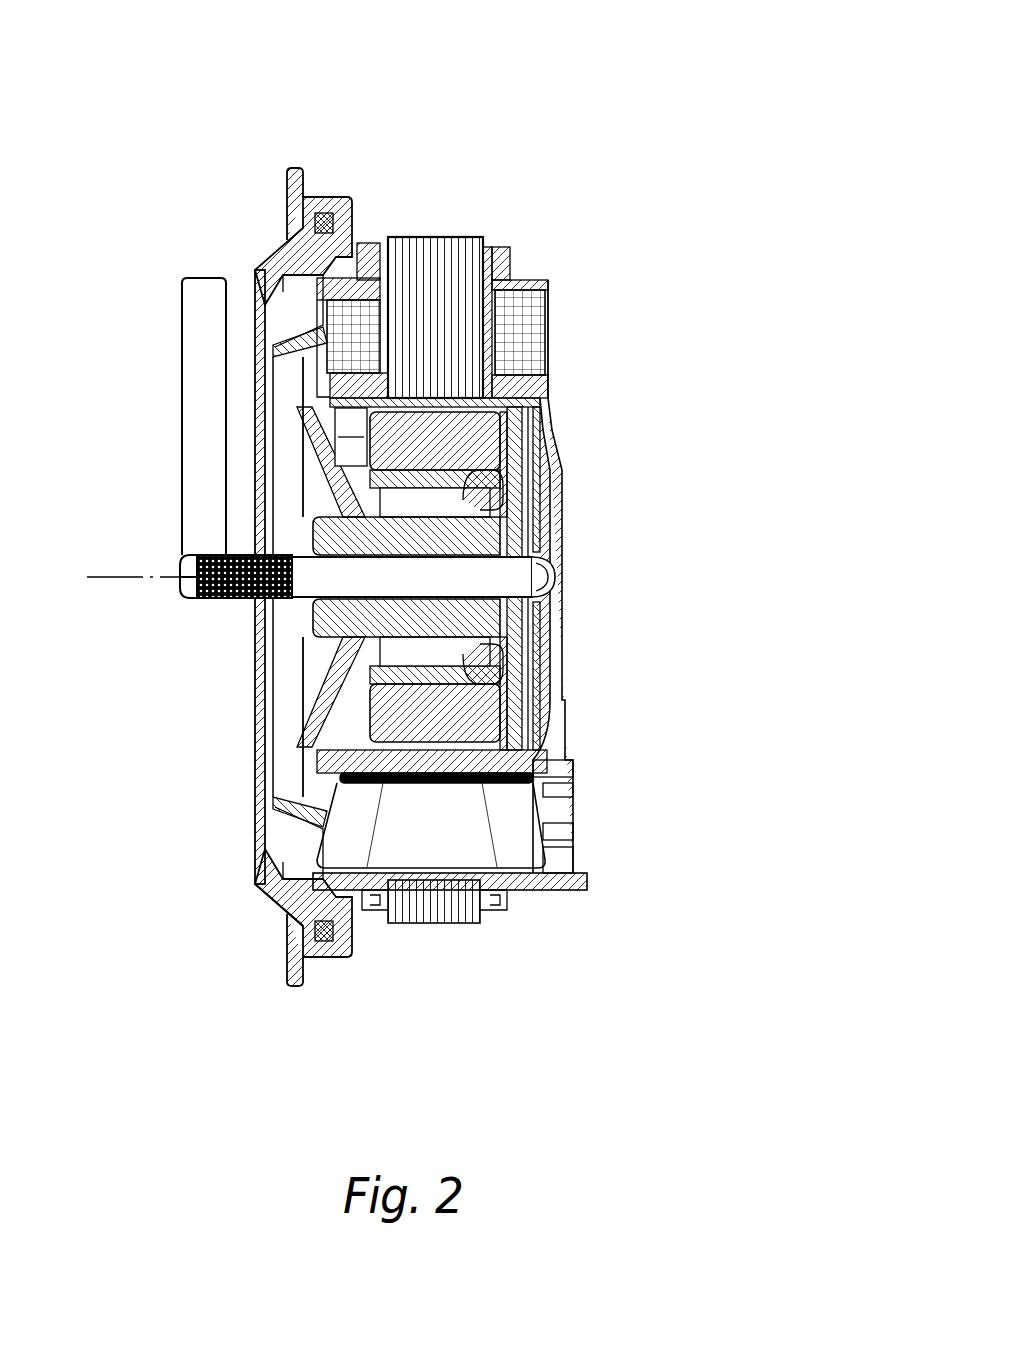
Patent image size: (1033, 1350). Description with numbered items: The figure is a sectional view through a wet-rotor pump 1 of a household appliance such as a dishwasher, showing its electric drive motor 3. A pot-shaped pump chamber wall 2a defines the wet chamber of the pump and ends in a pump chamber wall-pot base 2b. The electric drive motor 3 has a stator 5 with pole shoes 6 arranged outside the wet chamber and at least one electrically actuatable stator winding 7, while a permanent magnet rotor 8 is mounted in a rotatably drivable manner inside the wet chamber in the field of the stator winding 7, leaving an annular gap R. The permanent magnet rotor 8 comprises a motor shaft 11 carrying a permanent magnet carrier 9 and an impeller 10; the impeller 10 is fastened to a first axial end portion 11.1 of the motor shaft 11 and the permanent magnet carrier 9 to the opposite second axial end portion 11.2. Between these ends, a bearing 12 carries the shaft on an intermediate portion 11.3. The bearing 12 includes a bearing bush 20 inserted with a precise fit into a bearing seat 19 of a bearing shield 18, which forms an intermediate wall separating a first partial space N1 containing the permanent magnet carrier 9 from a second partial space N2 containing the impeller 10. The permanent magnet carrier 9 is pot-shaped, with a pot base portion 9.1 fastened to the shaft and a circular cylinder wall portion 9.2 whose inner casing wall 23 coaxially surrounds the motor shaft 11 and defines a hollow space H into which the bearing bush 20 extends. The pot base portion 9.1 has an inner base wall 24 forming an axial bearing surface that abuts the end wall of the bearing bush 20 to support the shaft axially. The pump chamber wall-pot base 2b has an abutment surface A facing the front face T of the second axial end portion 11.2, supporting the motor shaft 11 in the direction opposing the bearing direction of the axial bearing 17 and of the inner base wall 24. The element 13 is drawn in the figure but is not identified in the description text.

The wet-rotor pump 1 is at (197, 172).
The pump chamber wall 2a is at (330, 203).
The pump chamber wall-pot base 2b is at (557, 581).
The electric drive motor 3 is at (569, 344).
The stator 5 is at (425, 237).
The pole shoes 6 is at (490, 385).
The stator winding 7 is at (523, 323).
The permanent magnet rotor 8 is at (500, 686).
The permanent magnet carrier 9 is at (512, 468).
The pot base portion 9.1 is at (522, 672).
The circular cylinder wall portion 9.2 is at (447, 437).
The impeller 10 is at (190, 447).
The motor shaft 11 is at (167, 577).
The first axial end portion 11.1 is at (212, 603).
The second axial end portion 11.2 is at (517, 585).
The intermediate portion 11.3 is at (393, 570).
The bearing 12 is at (370, 643).
The plate 13 is at (540, 410).
The axial bearing 17 is at (500, 742).
The bearing shield 18 is at (278, 810).
The bearing seat 19 is at (357, 635).
The bearing bush 20 is at (335, 603).
The inner casing wall 23 is at (467, 500).
The inner base wall 24 is at (631, 830).
The abutment surface A is at (553, 607).
The annular gap R is at (548, 388).
The front face T is at (553, 565).
The hollow space H is at (435, 578).
The first partial space N1 is at (351, 437).
The second partial space N2 is at (222, 854).